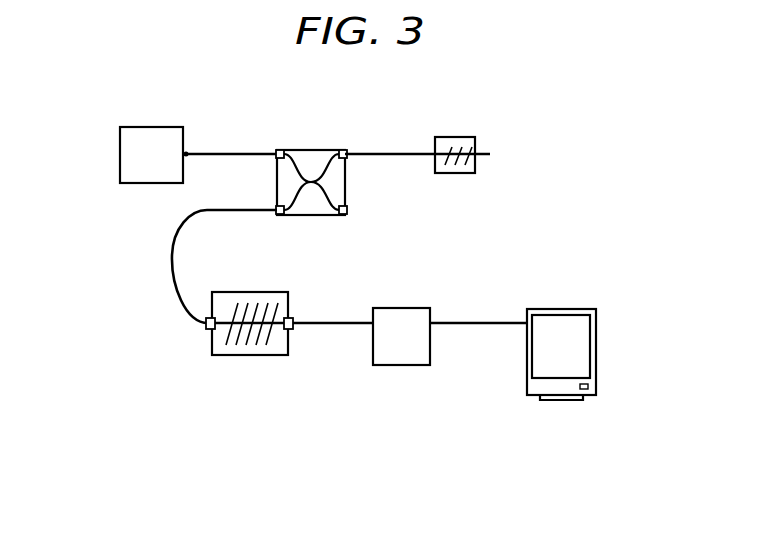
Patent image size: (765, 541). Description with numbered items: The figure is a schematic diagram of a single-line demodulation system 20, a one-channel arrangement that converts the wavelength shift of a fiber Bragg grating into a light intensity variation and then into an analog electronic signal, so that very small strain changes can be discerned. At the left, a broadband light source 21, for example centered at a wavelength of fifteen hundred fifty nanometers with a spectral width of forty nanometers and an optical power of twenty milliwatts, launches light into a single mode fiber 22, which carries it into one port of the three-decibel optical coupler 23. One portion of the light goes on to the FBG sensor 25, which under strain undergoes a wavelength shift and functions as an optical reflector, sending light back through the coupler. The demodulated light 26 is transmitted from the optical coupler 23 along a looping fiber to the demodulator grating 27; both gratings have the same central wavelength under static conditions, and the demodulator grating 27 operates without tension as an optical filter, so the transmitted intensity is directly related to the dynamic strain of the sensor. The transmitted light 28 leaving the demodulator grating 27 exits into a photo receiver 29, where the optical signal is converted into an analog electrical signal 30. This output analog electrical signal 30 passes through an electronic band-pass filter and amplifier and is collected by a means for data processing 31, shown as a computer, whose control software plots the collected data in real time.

The single-line demodulation system 20 is at (608, 127).
The light source 21 is at (120, 152).
The single mode fiber 22 is at (236, 152).
The 3-dB optical coupler 23 is at (307, 150).
The FBG sensor 25 is at (453, 137).
The demodulated light 26 is at (172, 262).
The demodulator grating 27 is at (245, 357).
The transmitted light 28 is at (330, 325).
The photo receiver 29 is at (397, 366).
The analog electrical signal 30 is at (470, 325).
The means for data processing 31 is at (596, 348).